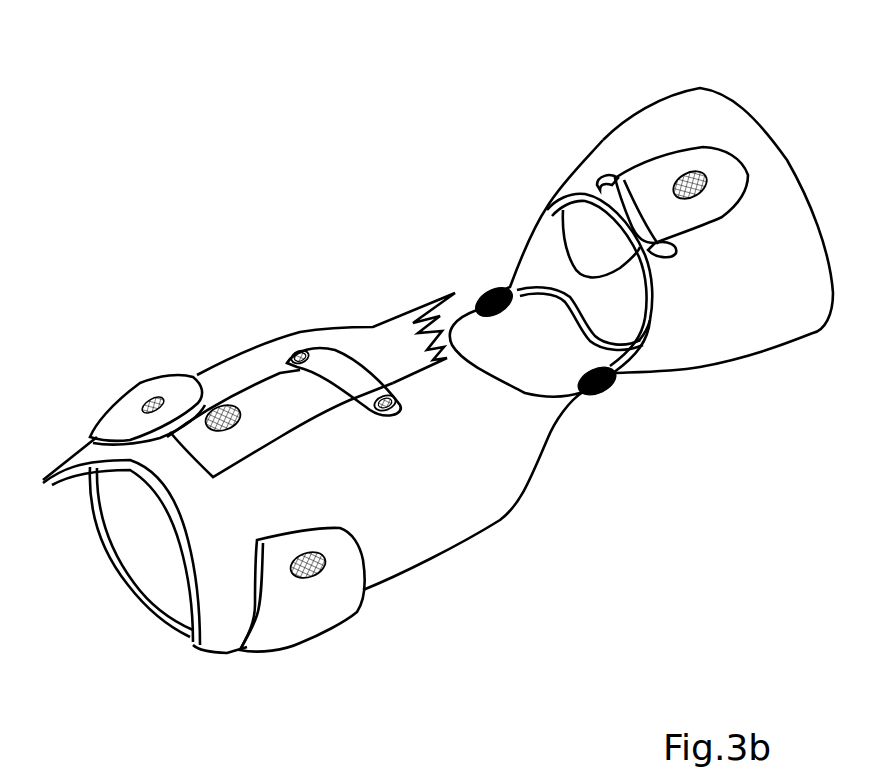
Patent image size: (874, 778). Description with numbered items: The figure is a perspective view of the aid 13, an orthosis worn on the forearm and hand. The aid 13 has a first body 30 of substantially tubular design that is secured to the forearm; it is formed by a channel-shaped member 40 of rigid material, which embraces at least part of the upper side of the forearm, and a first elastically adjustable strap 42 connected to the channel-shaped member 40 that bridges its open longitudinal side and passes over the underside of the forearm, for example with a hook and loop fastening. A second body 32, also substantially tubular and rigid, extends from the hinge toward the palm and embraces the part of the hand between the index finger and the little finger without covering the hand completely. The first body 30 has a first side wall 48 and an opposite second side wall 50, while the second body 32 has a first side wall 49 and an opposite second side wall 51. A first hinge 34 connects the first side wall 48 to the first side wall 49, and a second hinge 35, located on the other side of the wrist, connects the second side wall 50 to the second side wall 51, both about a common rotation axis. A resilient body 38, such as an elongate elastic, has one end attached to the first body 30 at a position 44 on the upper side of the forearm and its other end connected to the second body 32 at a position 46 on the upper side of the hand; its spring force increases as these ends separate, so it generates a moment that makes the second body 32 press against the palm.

The aid 13 is at (352, 253).
The first body 30 is at (444, 491).
The second body 32 is at (750, 300).
The first hinge 34 is at (603, 390).
The second hinge 35 is at (488, 294).
The resilient body 38 is at (592, 233).
The channel-shaped member 40 is at (218, 583).
The first elastically adjustable strap 42 is at (363, 565).
The position 44 is at (257, 378).
The position 46 is at (690, 185).
The first side wall 48 is at (528, 427).
The first side wall 49 is at (658, 357).
The second side wall 50 is at (224, 373).
The second side wall 51 is at (541, 267).